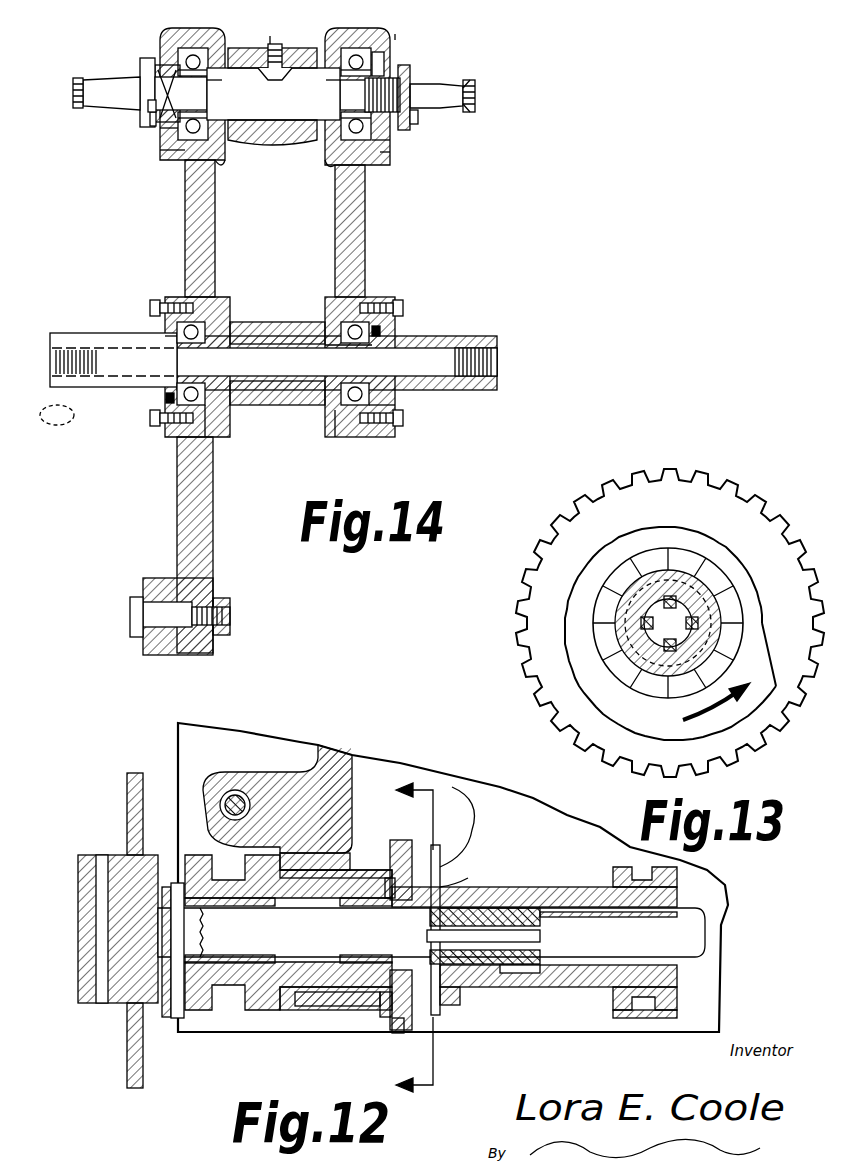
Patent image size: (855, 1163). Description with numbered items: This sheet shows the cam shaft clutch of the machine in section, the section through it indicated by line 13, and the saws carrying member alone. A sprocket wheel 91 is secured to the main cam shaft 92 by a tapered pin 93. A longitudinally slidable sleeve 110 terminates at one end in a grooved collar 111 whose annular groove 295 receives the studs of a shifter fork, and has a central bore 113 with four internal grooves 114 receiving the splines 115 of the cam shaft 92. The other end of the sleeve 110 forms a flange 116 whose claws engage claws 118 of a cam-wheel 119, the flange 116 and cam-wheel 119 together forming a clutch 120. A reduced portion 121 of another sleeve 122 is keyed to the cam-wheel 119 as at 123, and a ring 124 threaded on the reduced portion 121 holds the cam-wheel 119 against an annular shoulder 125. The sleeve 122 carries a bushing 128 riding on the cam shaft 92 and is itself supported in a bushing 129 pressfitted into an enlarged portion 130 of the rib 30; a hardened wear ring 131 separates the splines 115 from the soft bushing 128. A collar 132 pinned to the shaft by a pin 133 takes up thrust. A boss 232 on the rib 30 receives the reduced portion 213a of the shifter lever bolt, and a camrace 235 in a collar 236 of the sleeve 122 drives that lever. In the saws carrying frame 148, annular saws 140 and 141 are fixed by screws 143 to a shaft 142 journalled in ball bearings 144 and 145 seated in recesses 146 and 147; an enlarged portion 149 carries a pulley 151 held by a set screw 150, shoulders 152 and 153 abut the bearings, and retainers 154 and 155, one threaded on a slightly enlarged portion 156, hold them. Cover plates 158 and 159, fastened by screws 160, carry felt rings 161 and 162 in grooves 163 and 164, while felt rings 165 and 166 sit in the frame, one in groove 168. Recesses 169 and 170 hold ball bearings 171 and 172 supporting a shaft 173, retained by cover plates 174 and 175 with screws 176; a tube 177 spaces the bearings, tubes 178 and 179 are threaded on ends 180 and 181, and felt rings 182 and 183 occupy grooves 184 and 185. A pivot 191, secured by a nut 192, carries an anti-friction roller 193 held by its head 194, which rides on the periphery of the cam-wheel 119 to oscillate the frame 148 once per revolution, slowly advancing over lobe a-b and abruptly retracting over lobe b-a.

In FIG. 12, the rib 30 is at (335, 760).
In FIG. 13, the sprocket wheel 91 is at (748, 515).
In FIG. 12, the sprocket wheel 91 is at (130, 795).
In FIG. 12, the main cam shaft 92 is at (78, 940).
In FIG. 12, the tapered pin 93 is at (103, 868).
In FIG. 13, the sleeve 110 is at (710, 600).
In FIG. 12, the sleeve 110 is at (578, 895).
In FIG. 12, the grooved collar 111 is at (652, 1008).
In FIG. 13, the central bore 113 is at (683, 642).
In FIG. 13, the internal grooves 114 is at (607, 637).
In FIG. 12, the internal grooves 114 is at (607, 907).
In FIG. 13, the splines 115 is at (695, 617).
In FIG. 12, the splines 115 is at (517, 978).
In FIG. 13, the flange 116 is at (617, 676).
In FIG. 12, the flange 116 is at (450, 1012).
In FIG. 12, the claws 118 is at (438, 878).
In FIG. 13, the cam-wheel 119 is at (658, 730).
In FIG. 12, the cam-wheel 119 is at (396, 1030).
In FIG. 12, the clutch 120 is at (425, 868).
In FIG. 12, the reduced portion 121 is at (404, 853).
In FIG. 12, the sleeve 122 is at (357, 862).
In FIG. 12, the key 123 is at (373, 995).
In FIG. 12, the ring 124 is at (240, 956).
In FIG. 12, the annular shoulder 125 is at (384, 856).
In FIG. 12, the bushing 128 is at (378, 958).
In FIG. 12, the bushing 129 is at (288, 1000).
In FIG. 12, the enlarged portion 130 is at (340, 845).
In FIG. 12, the wear ring 131 is at (470, 890).
In FIG. 12, the collar 132 is at (165, 885).
In FIG. 12, the pin 133 is at (178, 885).
In FIG. 14, the annular saw 140 is at (116, 80).
In FIG. 14, the annular saw 141 is at (470, 82).
In FIG. 14, the shaft 142 is at (120, 88).
In FIG. 14, the screws 143 is at (76, 82).
In FIG. 14, the ball bearing 144 is at (222, 52).
In FIG. 14, the ball bearing 145 is at (385, 56).
In FIG. 14, the annular recess 146 is at (203, 34).
In FIG. 14, the annular recess 147 is at (370, 48).
In FIG. 14, the saws carrying frame 148 is at (345, 290).
In FIG. 14, the enlarged portion 149 is at (283, 105).
In FIG. 14, the set screw 150 is at (283, 55).
In FIG. 14, the pulley 151 is at (245, 135).
In FIG. 14, the annular shoulder 152 is at (220, 76).
In FIG. 14, the annular shoulder 153 is at (337, 74).
In FIG. 14, the ball bearing retainer 154 is at (168, 98).
In FIG. 14, the ball bearing retainer 155 is at (412, 118).
In FIG. 14, the slightly enlarged portion 156 is at (152, 112).
In FIG. 14, the cover plate 158 is at (170, 162).
In FIG. 14, the cover plate 159 is at (378, 146).
In FIG. 14, the screws 160 is at (156, 128).
In FIG. 14, the felt ring 161 is at (170, 130).
In FIG. 14, the felt ring 162 is at (392, 158).
In FIG. 14, the groove 163 is at (168, 62).
In FIG. 14, the groove 164 is at (272, 44).
In FIG. 14, the felt ring 165 is at (218, 168).
In FIG. 14, the felt ring 166 is at (330, 165).
In FIG. 14, the groove 168 is at (345, 34).
In FIG. 14, the annular recess 169 is at (197, 398).
In FIG. 14, the annular recess 170 is at (345, 437).
In FIG. 14, the ball bearing 171 is at (152, 408).
In FIG. 14, the ball bearing 172 is at (404, 408).
In FIG. 14, the shaft 173 is at (408, 363).
In FIG. 14, the cover plate 174 is at (172, 398).
In FIG. 14, the cover plate 175 is at (396, 430).
In FIG. 14, the screws 176 is at (152, 304).
In FIG. 14, the tube 177 is at (270, 330).
In FIG. 14, the tube 178 is at (92, 334).
In FIG. 14, the tube 179 is at (480, 338).
In FIG. 14, the end 180 is at (73, 370).
In FIG. 14, the end 181 is at (492, 362).
In FIG. 14, the felt ring 182 is at (168, 338).
In FIG. 14, the felt ring 183 is at (372, 345).
In FIG. 14, the annular groove 184 is at (166, 325).
In FIG. 14, the annular groove 185 is at (382, 330).
In FIG. 14, the pivot 191 is at (160, 614).
In FIG. 14, the nut 192 is at (226, 632).
In FIG. 14, the anti-friction roller 193 is at (152, 656).
In FIG. 14, the head 194 is at (138, 612).
In FIG. 12, the reduced portion 213a is at (232, 792).
In FIG. 12, the boss 232 is at (262, 790).
In FIG. 12, the camrace 235 is at (225, 992).
In FIG. 12, the collar 236 is at (202, 995).
In FIG. 12, the annular groove 295 is at (719, 882).
In FIG. 12, the section line 13 is at (416, 937).